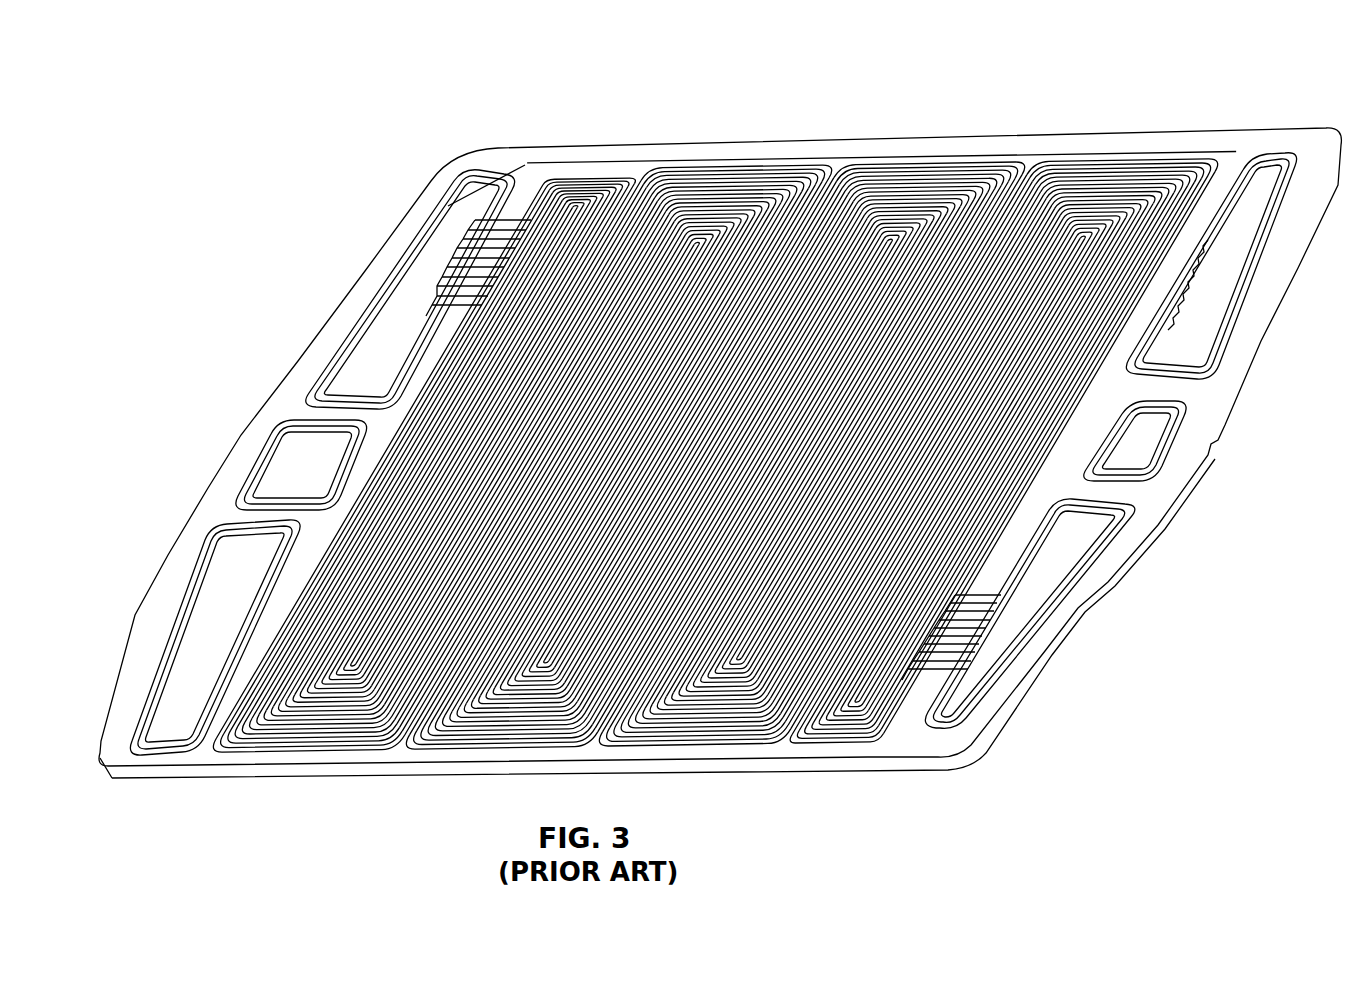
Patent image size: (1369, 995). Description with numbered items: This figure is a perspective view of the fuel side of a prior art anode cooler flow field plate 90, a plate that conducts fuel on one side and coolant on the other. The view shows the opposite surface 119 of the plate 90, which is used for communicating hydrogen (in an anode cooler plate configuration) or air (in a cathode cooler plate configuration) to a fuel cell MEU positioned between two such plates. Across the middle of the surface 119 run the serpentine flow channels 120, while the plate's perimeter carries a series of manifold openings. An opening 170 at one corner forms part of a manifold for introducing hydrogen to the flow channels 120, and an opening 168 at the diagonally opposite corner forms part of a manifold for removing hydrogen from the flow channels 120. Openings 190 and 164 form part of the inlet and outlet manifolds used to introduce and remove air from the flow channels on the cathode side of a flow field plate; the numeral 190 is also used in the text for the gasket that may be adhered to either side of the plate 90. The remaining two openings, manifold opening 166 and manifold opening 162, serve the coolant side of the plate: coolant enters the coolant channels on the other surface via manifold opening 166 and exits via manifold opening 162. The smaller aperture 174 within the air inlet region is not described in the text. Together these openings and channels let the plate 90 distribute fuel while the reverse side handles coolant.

The anode cooler flow field plate 90 is at (947, 755).
The opposite surface 119 is at (645, 748).
The flow channels 120 is at (885, 168).
The manifold opening 162 is at (1135, 450).
The opening 164 is at (1217, 317).
The manifold opening 166 is at (287, 472).
The opening 168 is at (1000, 625).
The opening 170 is at (380, 318).
The manifold aperture 174 is at (163, 677).
The opening 190 is at (142, 650).